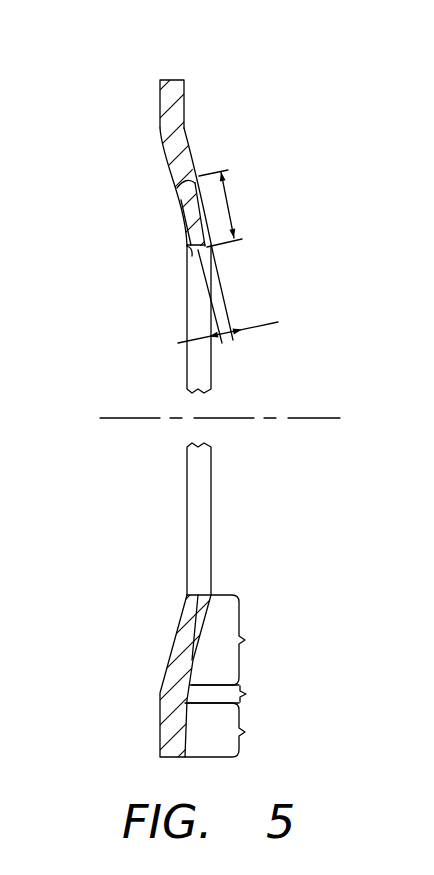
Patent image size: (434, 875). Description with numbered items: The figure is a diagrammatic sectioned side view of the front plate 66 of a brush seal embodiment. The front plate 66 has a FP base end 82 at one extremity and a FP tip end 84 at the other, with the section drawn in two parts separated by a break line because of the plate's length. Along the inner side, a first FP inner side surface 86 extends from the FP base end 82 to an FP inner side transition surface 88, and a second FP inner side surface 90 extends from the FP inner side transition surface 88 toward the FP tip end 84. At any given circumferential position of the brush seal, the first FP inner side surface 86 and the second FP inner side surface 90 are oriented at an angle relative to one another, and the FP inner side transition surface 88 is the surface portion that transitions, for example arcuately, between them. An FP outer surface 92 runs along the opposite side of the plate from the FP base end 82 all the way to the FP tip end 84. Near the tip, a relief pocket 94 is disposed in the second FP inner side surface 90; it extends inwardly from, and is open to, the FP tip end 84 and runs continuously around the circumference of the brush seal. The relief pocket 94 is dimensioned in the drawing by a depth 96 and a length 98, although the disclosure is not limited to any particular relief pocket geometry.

The front plate 66 is at (110, 109).
The FP base end 82 is at (172, 78).
The FP tip end 84 is at (187, 256).
The first FP inner side surface 86 is at (235, 730).
The FP inner side transition surface 88 is at (247, 694).
The second FP inner side surface 90 is at (205, 675).
The FP outer surface 92 is at (176, 182).
The relief pocket 94 is at (196, 208).
The depth 96 is at (268, 325).
The length 98 is at (232, 208).